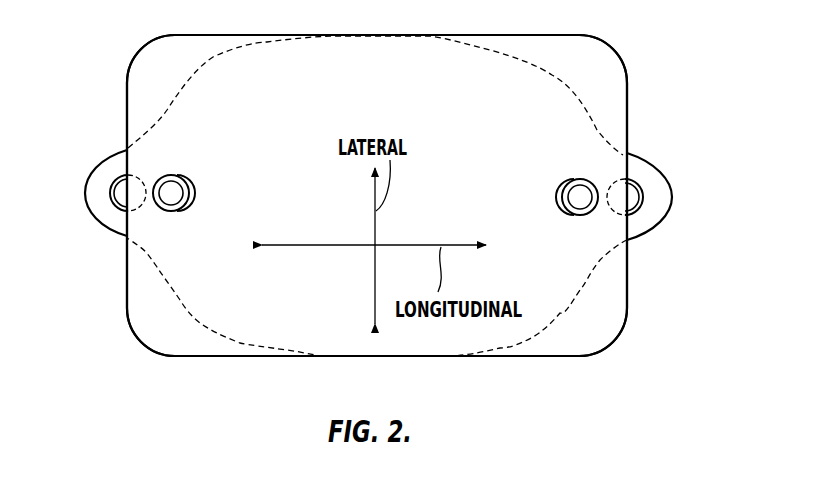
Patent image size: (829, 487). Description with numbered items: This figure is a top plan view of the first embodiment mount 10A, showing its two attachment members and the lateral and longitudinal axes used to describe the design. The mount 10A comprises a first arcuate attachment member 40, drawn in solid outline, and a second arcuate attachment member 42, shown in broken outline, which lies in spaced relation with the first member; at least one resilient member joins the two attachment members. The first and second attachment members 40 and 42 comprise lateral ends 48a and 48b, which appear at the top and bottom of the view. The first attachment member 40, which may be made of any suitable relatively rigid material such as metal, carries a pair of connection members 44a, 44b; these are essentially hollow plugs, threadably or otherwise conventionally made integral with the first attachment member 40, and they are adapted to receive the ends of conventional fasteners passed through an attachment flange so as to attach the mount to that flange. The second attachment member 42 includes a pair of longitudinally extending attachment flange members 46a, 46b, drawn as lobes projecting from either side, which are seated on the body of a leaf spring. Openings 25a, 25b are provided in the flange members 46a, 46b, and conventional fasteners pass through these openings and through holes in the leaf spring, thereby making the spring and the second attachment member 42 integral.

The first embodiment mount 10A is at (126, 374).
The first arcuate attachment member 40 is at (578, 338).
The second arcuate attachment member 42 is at (570, 85).
The lateral end 48a is at (378, 35).
The lateral end 48b is at (253, 357).
The attachment flange member 46a is at (102, 227).
The attachment flange member 46b is at (645, 175).
The opening 25a is at (115, 185).
The opening 25b is at (640, 208).
The connection member 44a is at (194, 188).
The connection member 44b is at (561, 194).